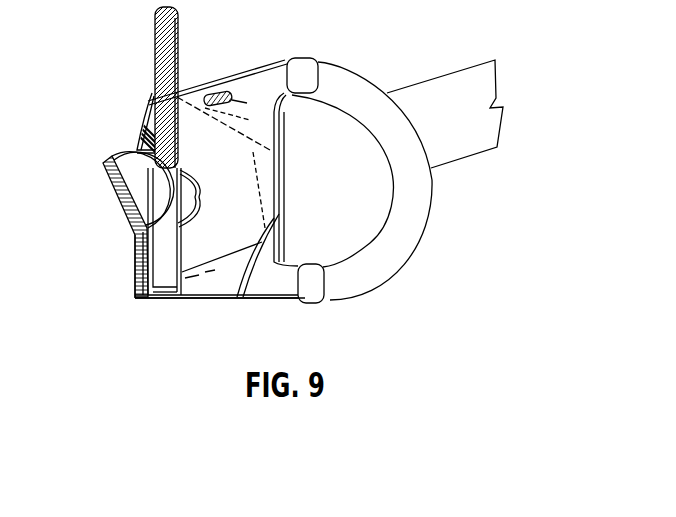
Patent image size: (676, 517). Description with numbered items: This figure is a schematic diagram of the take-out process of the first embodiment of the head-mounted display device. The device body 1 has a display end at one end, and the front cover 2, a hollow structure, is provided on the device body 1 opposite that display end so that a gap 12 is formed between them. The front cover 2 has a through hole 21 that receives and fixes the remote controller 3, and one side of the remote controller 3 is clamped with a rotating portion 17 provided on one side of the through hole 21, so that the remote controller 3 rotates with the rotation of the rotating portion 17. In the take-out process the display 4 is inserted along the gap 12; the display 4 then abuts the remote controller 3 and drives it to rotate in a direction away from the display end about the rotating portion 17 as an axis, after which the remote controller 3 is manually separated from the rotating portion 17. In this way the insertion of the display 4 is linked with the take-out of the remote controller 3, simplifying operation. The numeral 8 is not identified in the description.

The device body 1 is at (150, 89).
The front cover 2 is at (135, 269).
The remote controller 3 is at (138, 184).
The display 4 is at (138, 127).
The sleeve 8 is at (97, 228).
The gap 12 is at (178, 228).
The rotating portion 17 is at (136, 241).
The through hole 21 is at (135, 158).